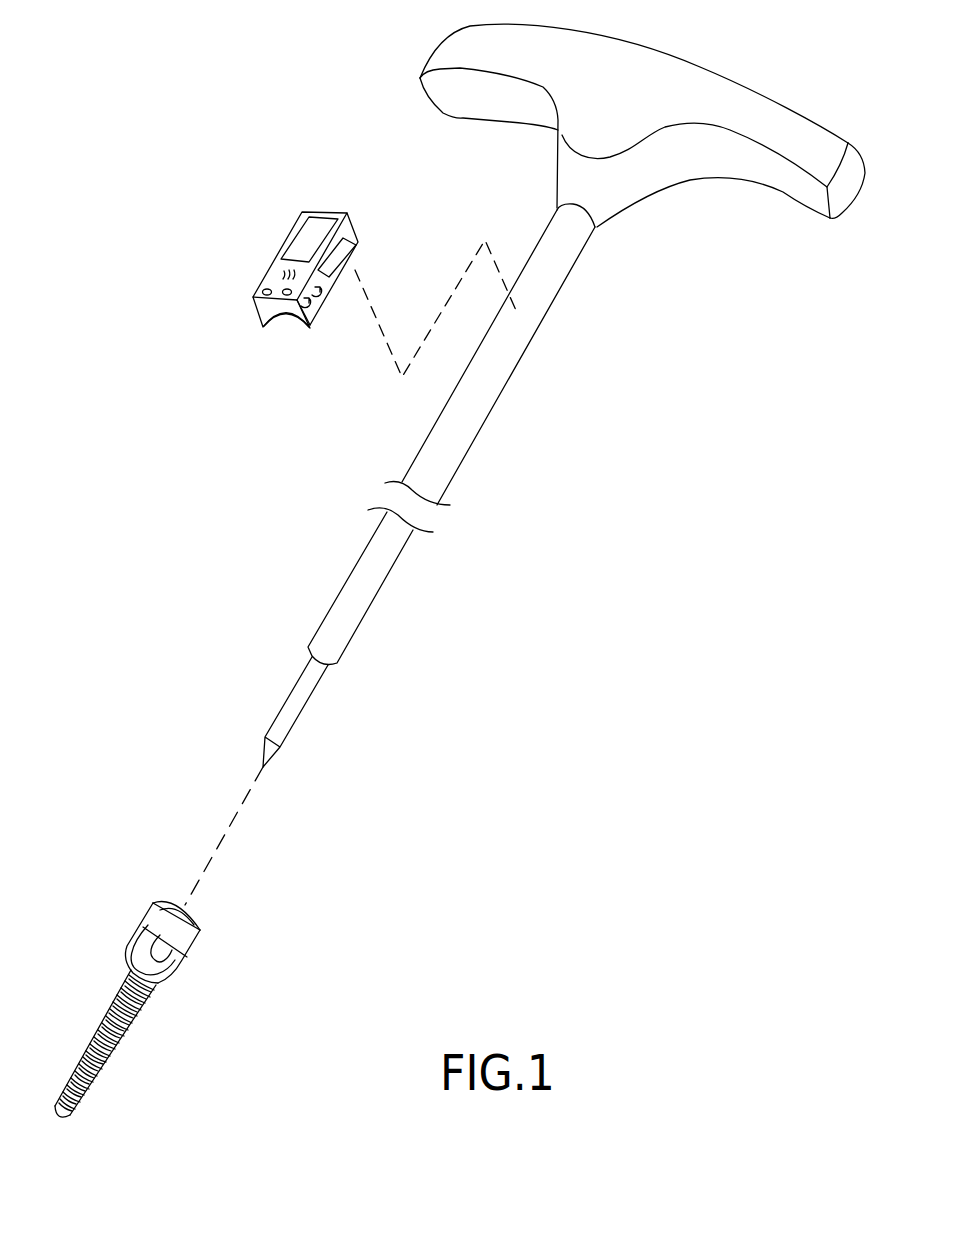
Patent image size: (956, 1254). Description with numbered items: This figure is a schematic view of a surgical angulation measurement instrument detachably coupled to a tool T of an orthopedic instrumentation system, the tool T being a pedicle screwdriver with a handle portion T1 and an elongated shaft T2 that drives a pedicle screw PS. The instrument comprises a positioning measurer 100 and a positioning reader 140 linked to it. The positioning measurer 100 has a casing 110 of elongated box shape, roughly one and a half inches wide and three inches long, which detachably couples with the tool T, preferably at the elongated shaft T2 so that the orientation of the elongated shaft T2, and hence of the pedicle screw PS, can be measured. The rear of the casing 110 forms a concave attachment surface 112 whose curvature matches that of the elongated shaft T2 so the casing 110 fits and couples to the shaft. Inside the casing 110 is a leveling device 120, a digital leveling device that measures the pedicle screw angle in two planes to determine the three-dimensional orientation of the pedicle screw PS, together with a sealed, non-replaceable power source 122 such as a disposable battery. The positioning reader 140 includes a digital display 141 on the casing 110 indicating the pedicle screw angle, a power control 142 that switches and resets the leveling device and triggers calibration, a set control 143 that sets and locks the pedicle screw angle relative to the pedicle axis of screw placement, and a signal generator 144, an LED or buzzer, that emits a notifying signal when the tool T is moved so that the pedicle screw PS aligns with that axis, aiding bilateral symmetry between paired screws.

The positioning measurer 100 is at (375, 457).
The casing 110 is at (260, 323).
The attachment surface 112 is at (280, 318).
The leveling device 120 is at (318, 292).
The power source 122 is at (310, 327).
The positioning reader 140 is at (363, 52).
The display 141 is at (344, 246).
The power control 142 is at (263, 290).
The set control 143 is at (283, 290).
The signal generator 144 is at (283, 272).
The tool T is at (683, 387).
The handle portion T1 is at (675, 162).
The elongated shaft T2 is at (453, 437).
The pedicle screw PS is at (133, 1023).